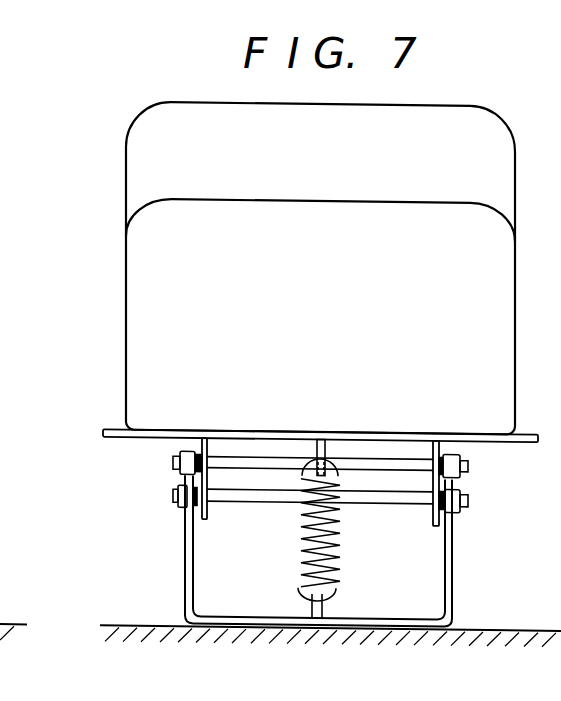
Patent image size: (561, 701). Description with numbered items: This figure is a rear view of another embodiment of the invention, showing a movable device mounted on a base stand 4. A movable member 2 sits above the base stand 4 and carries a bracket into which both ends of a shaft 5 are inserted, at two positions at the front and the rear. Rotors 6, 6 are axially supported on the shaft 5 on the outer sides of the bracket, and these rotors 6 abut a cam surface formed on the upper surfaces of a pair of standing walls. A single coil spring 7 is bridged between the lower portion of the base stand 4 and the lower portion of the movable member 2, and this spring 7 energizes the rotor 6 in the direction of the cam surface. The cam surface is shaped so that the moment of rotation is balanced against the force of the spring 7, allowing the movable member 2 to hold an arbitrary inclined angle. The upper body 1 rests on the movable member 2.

The container body 1 is at (515, 335).
The movable member 2 is at (530, 434).
The base stand 4 is at (452, 584).
The shaft 5 is at (405, 459).
The rotor 6 is at (180, 457).
The spring 7 is at (333, 549).